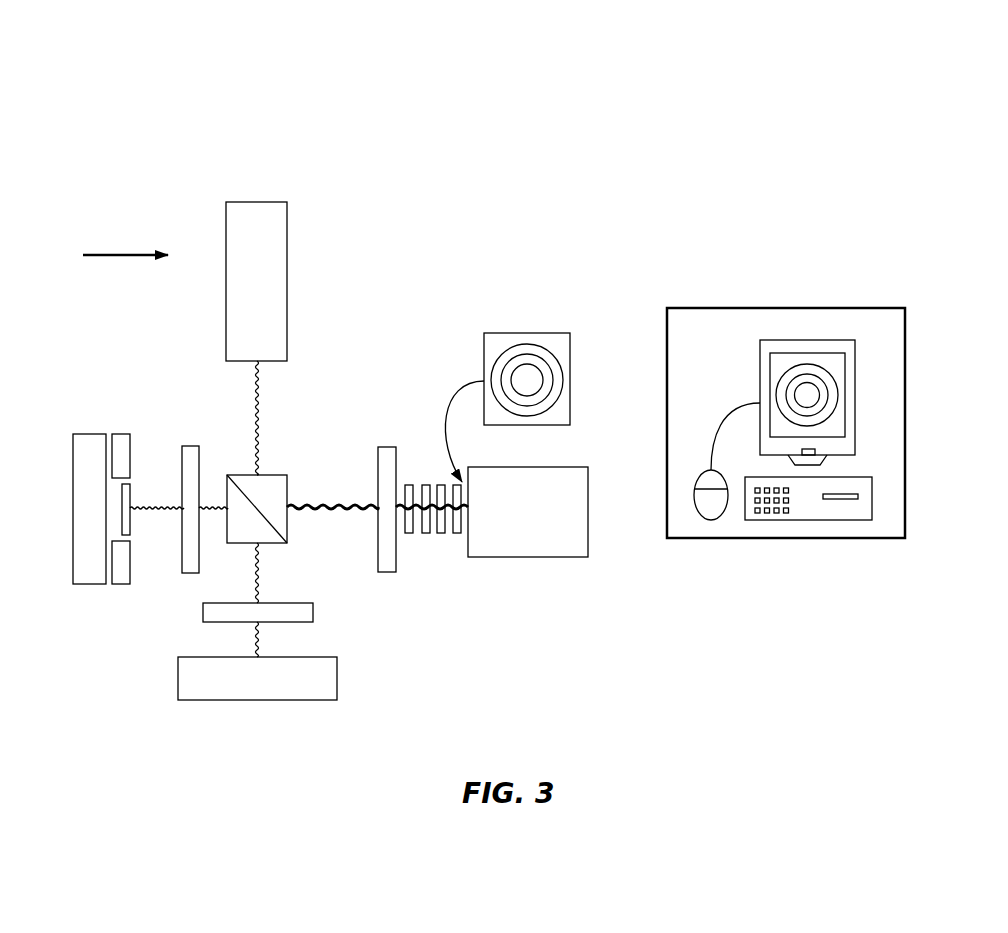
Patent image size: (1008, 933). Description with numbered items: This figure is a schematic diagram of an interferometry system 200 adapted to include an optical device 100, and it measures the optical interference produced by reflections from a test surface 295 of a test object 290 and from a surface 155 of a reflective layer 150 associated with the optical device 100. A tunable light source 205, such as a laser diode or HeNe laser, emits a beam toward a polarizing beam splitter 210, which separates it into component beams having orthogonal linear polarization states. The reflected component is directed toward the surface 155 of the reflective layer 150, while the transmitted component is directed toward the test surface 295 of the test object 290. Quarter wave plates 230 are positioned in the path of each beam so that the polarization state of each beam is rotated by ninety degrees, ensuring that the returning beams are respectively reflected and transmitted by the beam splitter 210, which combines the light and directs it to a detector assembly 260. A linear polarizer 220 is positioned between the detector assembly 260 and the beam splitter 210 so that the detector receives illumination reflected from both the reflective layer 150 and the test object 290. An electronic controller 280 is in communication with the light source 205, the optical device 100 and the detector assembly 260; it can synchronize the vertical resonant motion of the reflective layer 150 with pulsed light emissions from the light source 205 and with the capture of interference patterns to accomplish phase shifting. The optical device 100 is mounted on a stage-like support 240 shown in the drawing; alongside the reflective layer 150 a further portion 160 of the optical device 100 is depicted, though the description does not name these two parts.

The interferometry system 200 is at (268, 88).
The tunable light source 205 is at (259, 203).
The polarizing beam splitter 210 is at (290, 485).
The linear polarizer 220 is at (387, 445).
The quarter wave plate 230 is at (193, 444).
The stage 240 is at (90, 432).
The optical device 100 is at (103, 534).
The reflective layer 150 is at (133, 541).
The surface of reflective layer 155 is at (135, 519).
The substrate 160 is at (122, 588).
The detector assembly 260 is at (527, 560).
The electronic controller 280 is at (790, 543).
The test object 290 is at (252, 702).
The test surface 295 is at (322, 655).